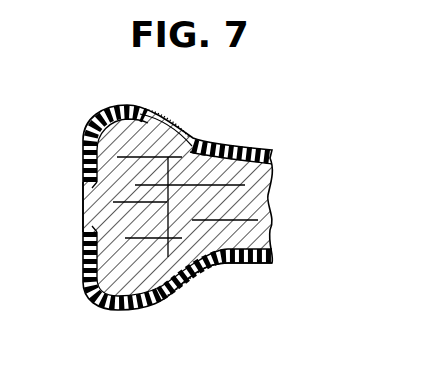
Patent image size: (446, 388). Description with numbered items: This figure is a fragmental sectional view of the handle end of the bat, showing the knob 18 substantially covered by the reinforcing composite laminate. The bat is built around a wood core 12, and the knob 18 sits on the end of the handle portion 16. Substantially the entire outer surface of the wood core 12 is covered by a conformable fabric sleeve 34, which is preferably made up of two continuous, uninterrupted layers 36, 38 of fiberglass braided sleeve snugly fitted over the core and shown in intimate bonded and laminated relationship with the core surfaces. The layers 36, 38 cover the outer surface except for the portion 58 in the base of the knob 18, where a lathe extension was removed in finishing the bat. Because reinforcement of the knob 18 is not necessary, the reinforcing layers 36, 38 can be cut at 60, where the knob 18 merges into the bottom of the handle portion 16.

The wood core 12 is at (262, 195).
The handle portion 16 is at (247, 139).
The knob 18 is at (117, 308).
The conformable fabric sleeve 34 is at (110, 108).
The first sleeve layer 36 is at (270, 240).
The second sleeve layer 38 is at (253, 264).
The uncovered portion in base of knob 58 is at (91, 213).
The cut location of reinforcing layers 60 is at (181, 133).